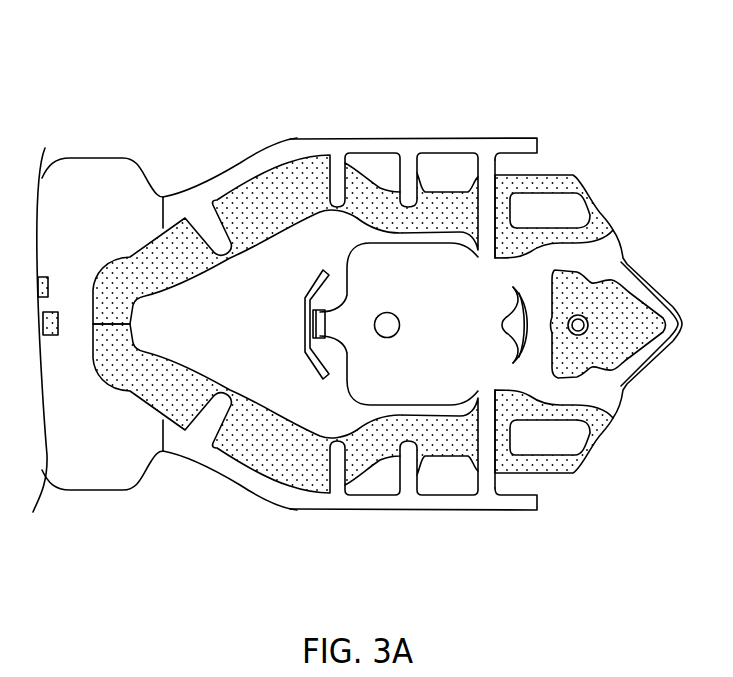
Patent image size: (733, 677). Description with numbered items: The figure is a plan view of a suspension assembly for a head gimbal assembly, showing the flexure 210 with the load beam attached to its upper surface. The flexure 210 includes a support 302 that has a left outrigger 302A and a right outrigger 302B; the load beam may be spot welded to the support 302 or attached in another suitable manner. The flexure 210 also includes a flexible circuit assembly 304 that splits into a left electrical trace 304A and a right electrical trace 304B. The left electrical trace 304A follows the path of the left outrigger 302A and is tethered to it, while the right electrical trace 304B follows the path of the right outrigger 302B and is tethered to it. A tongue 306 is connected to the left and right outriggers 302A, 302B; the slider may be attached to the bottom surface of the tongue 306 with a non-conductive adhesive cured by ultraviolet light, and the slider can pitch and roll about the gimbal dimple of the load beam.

The flexure 210 is at (592, 60).
The support 302 is at (58, 520).
The left outrigger 302A is at (484, 137).
The right outrigger 302B is at (485, 503).
The flexible circuit assembly 304 is at (622, 215).
The left electrical trace 304A is at (285, 230).
The right electrical trace 304B is at (188, 378).
The tongue 306 is at (352, 400).